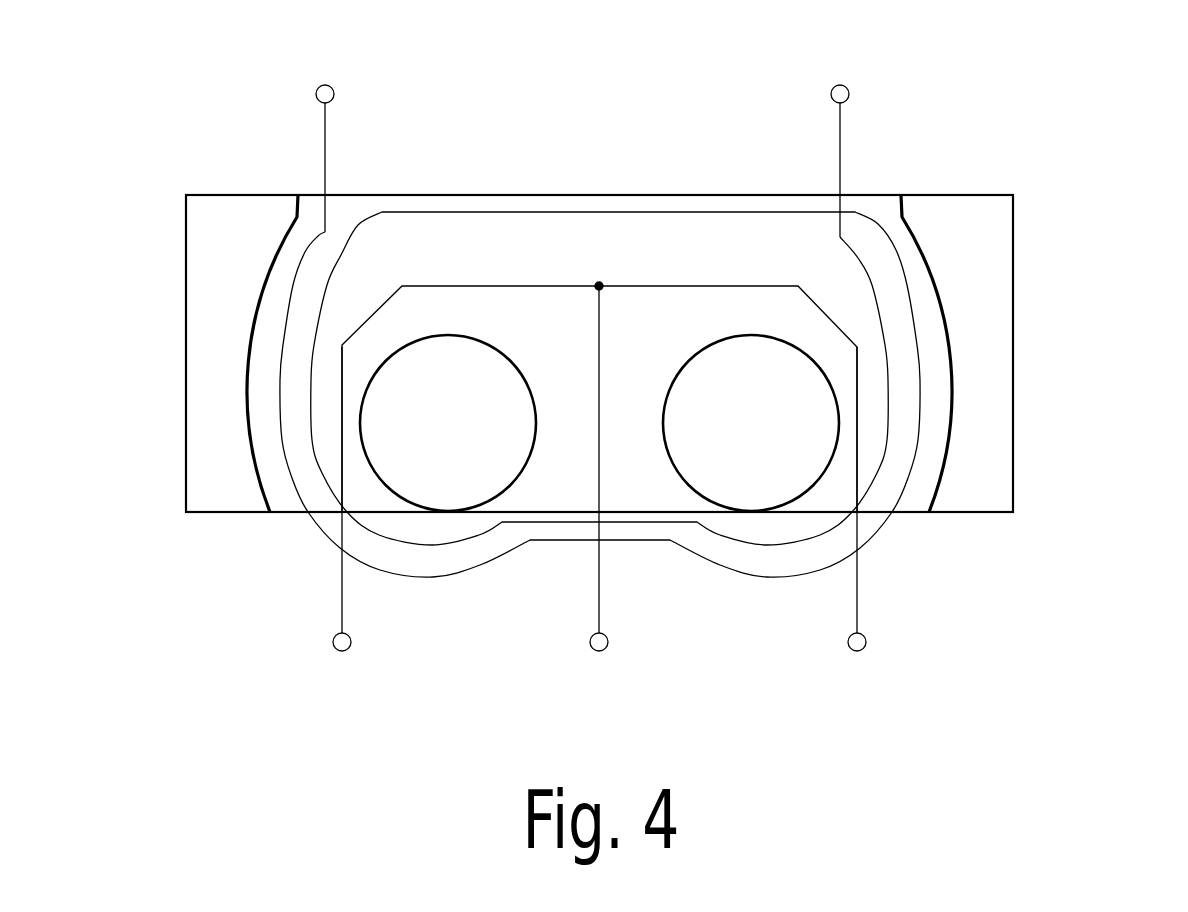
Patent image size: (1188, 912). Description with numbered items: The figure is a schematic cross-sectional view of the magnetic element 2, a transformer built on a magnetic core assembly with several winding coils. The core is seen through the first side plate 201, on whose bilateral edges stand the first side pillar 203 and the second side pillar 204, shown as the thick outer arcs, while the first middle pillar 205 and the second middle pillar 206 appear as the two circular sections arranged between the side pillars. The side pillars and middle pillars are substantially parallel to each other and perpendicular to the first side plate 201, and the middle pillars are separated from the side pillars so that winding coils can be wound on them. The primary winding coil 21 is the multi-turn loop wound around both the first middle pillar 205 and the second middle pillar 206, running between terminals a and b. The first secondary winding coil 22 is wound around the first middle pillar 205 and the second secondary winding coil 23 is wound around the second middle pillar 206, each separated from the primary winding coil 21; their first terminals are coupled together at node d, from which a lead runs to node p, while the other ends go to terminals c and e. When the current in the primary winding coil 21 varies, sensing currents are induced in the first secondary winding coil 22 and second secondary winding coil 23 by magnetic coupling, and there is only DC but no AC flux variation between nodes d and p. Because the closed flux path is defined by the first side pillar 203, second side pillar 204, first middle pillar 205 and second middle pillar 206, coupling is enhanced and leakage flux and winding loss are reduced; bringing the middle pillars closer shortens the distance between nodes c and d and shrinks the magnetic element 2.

The magnetic element 2 is at (108, 62).
The first side plate 201 is at (356, 212).
The primary winding coil 21 is at (845, 163).
The first secondary winding coil 22 is at (859, 574).
The second secondary winding coil 23 is at (340, 574).
The first side pillar 203 is at (989, 330).
The second side pillar 204 is at (210, 330).
The first middle pillar 205 is at (720, 405).
The second middle pillar 206 is at (482, 405).